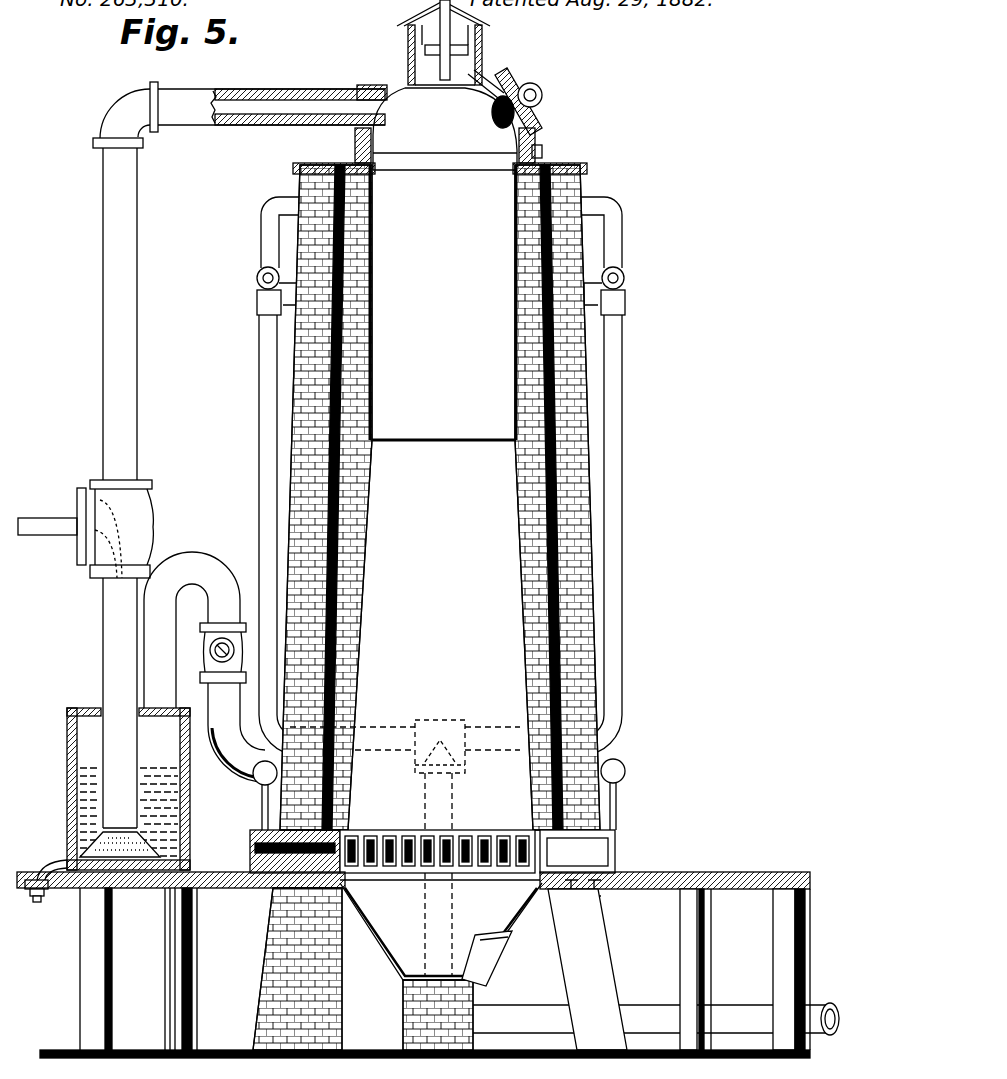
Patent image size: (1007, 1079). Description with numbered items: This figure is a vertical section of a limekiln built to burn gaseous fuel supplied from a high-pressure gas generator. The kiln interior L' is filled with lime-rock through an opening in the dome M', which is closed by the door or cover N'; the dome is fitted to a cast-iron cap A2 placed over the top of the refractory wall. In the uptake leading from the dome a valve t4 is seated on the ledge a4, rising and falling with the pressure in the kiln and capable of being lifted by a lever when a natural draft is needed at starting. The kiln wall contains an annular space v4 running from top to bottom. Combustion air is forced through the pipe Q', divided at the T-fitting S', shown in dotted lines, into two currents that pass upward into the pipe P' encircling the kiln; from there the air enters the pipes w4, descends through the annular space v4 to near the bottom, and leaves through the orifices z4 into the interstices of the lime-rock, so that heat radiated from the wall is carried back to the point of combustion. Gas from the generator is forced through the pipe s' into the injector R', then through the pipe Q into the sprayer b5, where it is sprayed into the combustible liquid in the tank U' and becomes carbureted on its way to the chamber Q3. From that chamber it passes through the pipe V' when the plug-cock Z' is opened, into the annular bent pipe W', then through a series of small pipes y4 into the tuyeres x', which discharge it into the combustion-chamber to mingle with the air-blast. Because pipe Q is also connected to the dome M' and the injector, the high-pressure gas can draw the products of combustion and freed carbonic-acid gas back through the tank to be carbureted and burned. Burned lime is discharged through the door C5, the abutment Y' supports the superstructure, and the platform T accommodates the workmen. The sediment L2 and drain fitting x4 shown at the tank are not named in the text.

The valve t4 is at (434, 42).
The ledge a4 is at (488, 72).
The door or cover N' is at (527, 113).
The dome M' is at (437, 127).
The pipe Q is at (239, 422).
The injector R' is at (115, 529).
The pipe s' is at (47, 517).
The pipe V' is at (192, 613).
The plug-cock Z' is at (223, 628).
The annular bent pipe W' is at (439, 775).
The small pipes y4 is at (441, 806).
The air-supply pipe Q' is at (529, 678).
The pipes w4 is at (441, 222).
The pipe P' is at (440, 286).
The interior L' is at (440, 497).
The iron cap A2 is at (296, 166).
The annular space v4 is at (448, 145).
The T-fitting S' is at (440, 732).
The orifices z4 is at (392, 771).
The tuyeres x' is at (432, 863).
The tank U' is at (110, 789).
The chamber Q3 is at (129, 793).
The sprayer b5 is at (120, 804).
The sediment L2 is at (123, 831).
The drain cock x4 is at (46, 868).
The platform T is at (413, 952).
The abutment Y' is at (397, 966).
The door C5 is at (490, 960).